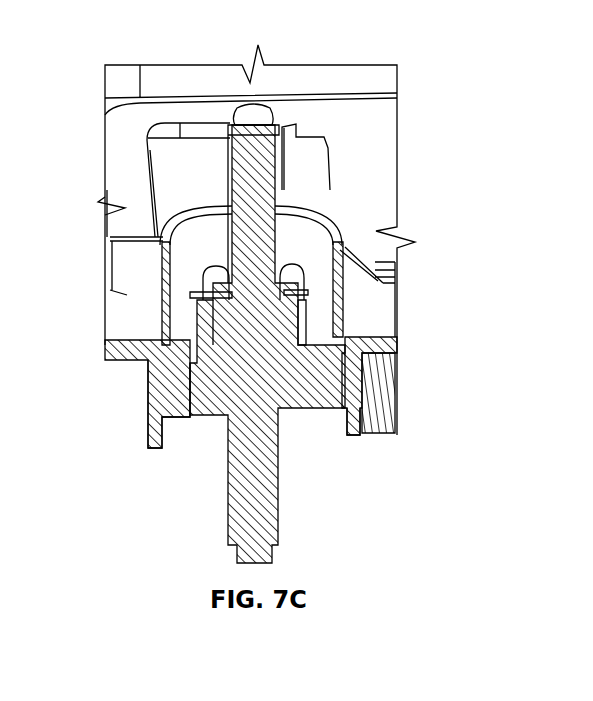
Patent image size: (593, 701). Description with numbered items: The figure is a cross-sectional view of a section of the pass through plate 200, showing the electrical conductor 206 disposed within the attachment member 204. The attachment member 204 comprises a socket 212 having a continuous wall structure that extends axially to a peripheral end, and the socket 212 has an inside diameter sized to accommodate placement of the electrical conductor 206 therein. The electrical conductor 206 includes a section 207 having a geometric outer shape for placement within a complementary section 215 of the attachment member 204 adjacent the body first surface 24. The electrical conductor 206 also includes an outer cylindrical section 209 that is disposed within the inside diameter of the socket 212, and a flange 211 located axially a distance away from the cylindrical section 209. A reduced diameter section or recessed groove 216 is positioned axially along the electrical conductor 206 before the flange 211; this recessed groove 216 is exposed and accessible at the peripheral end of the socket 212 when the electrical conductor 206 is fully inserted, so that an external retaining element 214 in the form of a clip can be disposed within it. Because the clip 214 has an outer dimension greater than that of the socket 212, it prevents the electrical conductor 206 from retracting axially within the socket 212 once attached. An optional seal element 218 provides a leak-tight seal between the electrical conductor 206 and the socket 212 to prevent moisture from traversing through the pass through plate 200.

The pass through plate 200 is at (2, 66).
The attachment member 204 is at (350, 303).
The electrical conductor 206 is at (230, 515).
The section 207 is at (327, 380).
The outer cylindrical section 209 is at (215, 320).
The flange 211 is at (205, 290).
The socket 212 is at (307, 318).
The external retaining element 214 is at (300, 298).
The complementary section 215 is at (190, 395).
The recessed groove 216 is at (292, 292).
The seal element 218 is at (217, 345).
The body first surface 24 is at (350, 437).